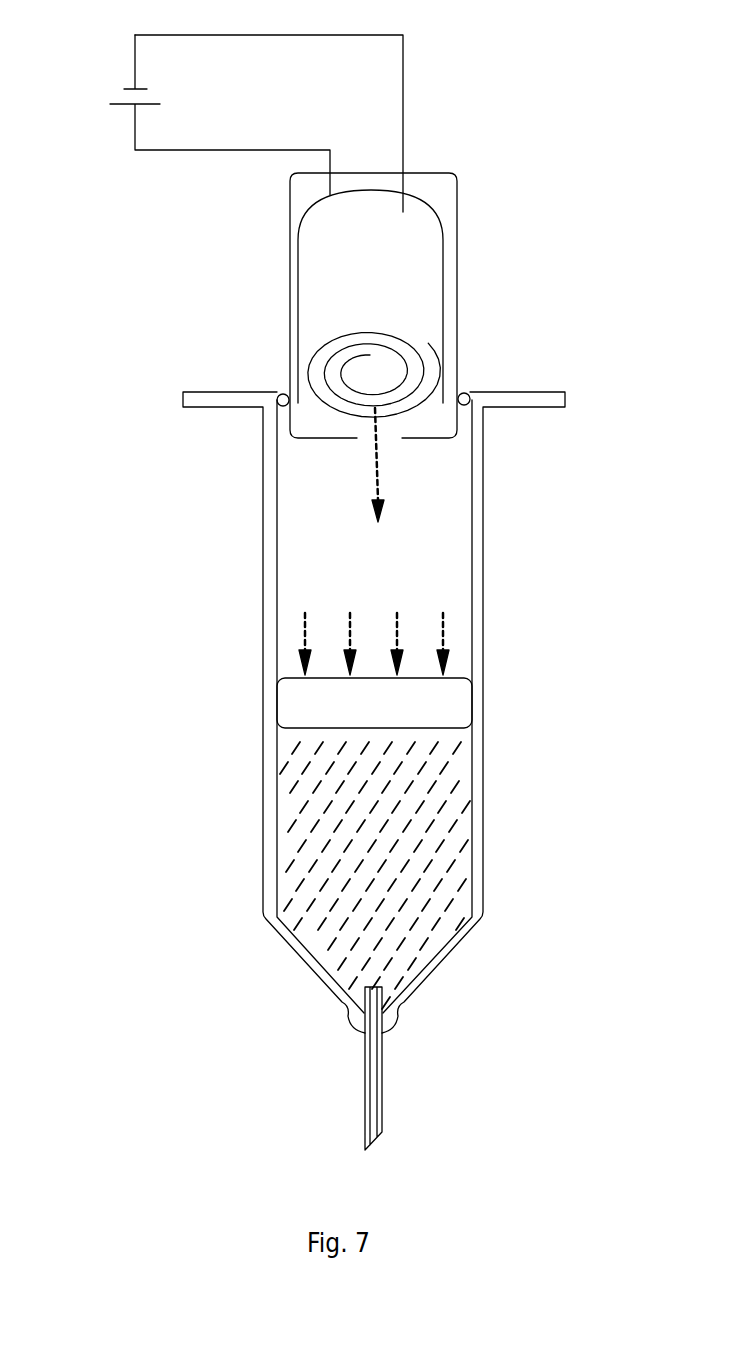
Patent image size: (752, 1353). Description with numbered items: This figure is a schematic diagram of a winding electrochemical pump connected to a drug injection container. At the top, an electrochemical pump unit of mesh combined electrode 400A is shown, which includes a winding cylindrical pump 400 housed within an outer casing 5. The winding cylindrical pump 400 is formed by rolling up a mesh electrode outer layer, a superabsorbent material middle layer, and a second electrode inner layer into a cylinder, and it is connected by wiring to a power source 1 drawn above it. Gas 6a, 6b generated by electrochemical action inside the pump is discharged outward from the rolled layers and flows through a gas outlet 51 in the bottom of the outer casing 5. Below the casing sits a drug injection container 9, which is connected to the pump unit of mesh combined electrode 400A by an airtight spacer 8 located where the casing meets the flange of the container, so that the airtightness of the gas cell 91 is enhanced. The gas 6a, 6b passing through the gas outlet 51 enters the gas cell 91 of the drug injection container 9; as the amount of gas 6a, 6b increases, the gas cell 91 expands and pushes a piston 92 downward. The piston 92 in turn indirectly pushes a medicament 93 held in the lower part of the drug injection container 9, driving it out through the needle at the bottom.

The power supply 1 is at (108, 88).
The electrochemical pump unit of mesh combined electrode 400A is at (474, 134).
The outer casing 5 is at (290, 272).
The winding cylindrical pump 400 is at (440, 282).
The airtight spacer 8 is at (276, 393).
The gas outlet 51 is at (360, 445).
The gas 6a is at (369, 562).
The gas 6b is at (388, 475).
The drug injection container 9 is at (268, 730).
The gas cell 91 is at (298, 549).
The piston 92 is at (445, 705).
The medicament 93 is at (455, 868).